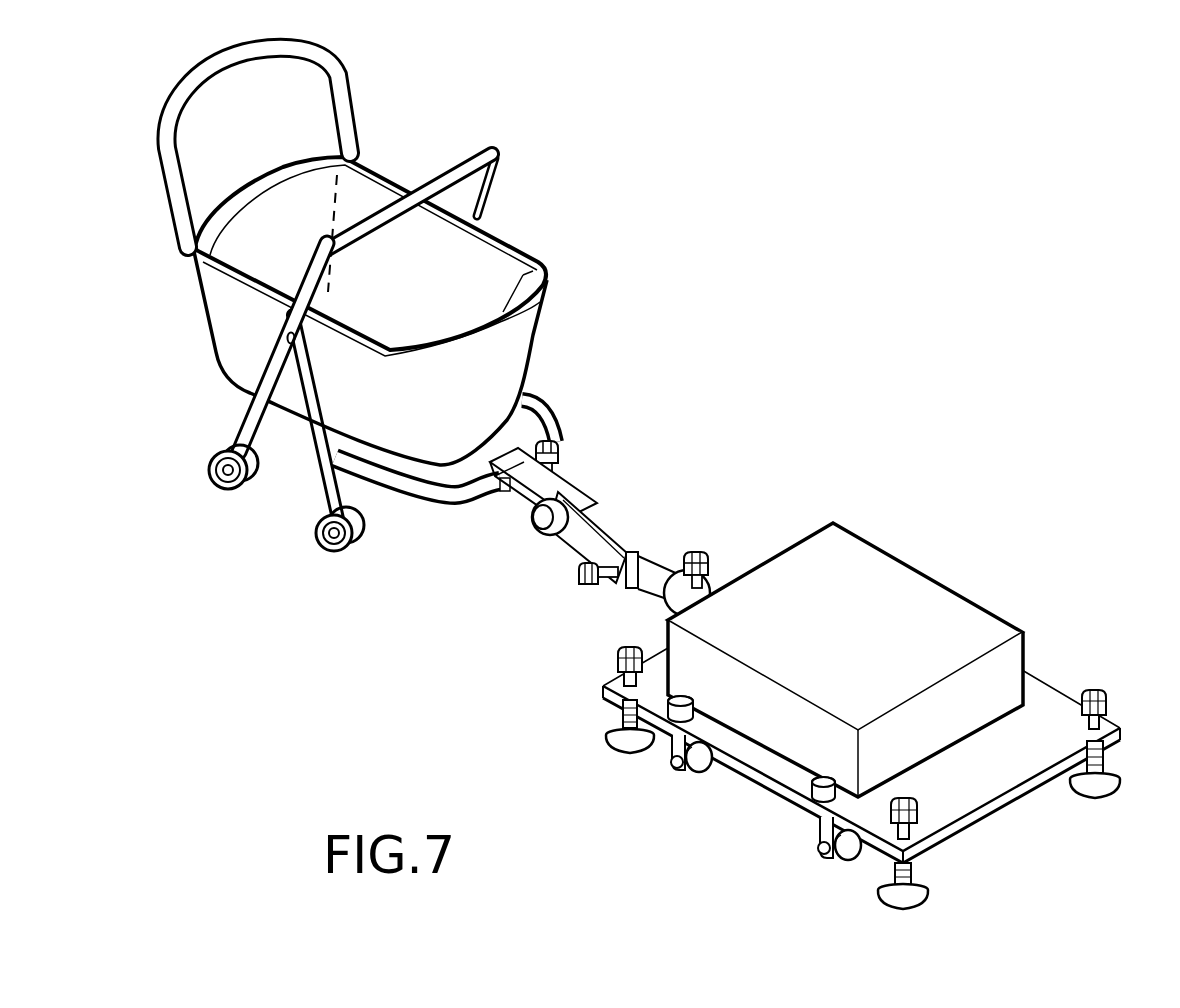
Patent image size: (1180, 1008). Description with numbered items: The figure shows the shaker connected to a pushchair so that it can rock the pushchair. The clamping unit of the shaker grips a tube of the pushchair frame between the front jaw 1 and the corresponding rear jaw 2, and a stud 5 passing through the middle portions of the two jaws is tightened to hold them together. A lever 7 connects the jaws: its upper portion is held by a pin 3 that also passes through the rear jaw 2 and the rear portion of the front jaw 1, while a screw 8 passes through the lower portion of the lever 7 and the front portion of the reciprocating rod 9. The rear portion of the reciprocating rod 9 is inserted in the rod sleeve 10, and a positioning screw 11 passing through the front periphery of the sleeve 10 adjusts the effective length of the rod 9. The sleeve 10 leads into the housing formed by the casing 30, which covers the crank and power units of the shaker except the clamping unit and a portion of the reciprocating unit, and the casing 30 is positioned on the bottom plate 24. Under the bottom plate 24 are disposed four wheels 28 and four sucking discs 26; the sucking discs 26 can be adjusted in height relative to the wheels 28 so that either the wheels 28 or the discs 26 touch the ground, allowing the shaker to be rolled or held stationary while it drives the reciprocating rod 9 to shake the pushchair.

The front jaw 1 is at (561, 478).
The rear jaw 2 is at (513, 512).
The pin 3 is at (542, 530).
The stud 5 is at (560, 441).
The lever 7 is at (582, 539).
The screw 8 is at (587, 587).
The reciprocating rod 9 is at (656, 572).
The rod sleeve 10 is at (679, 606).
The positioning screw 11 is at (702, 548).
The bottom plate 24 is at (1047, 710).
The sucking disc 26 is at (1114, 773).
The wheel 28 is at (713, 766).
The casing 30 is at (960, 620).